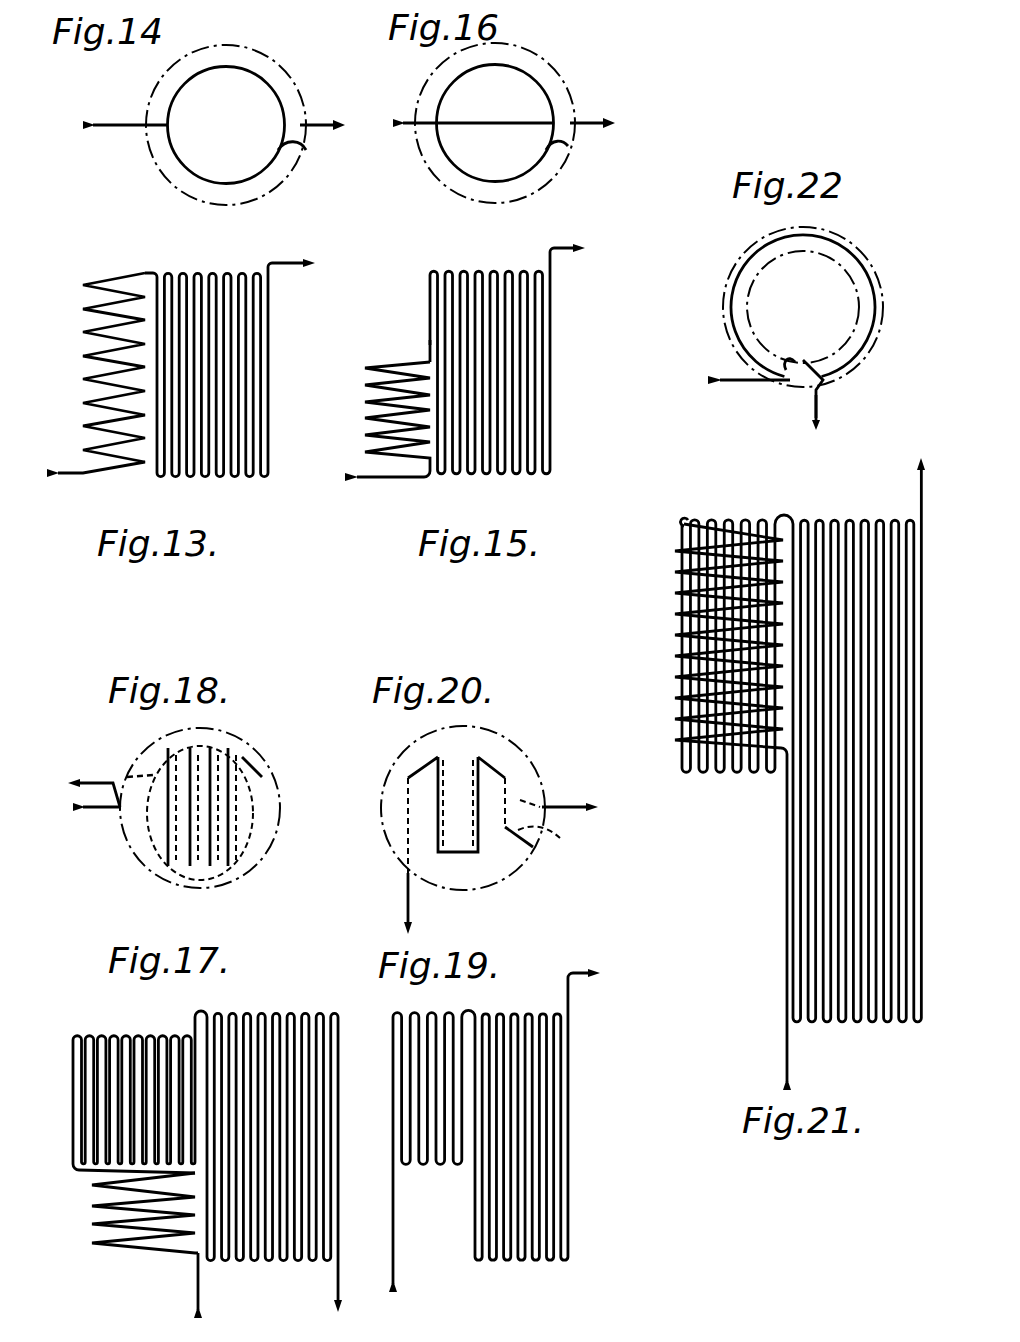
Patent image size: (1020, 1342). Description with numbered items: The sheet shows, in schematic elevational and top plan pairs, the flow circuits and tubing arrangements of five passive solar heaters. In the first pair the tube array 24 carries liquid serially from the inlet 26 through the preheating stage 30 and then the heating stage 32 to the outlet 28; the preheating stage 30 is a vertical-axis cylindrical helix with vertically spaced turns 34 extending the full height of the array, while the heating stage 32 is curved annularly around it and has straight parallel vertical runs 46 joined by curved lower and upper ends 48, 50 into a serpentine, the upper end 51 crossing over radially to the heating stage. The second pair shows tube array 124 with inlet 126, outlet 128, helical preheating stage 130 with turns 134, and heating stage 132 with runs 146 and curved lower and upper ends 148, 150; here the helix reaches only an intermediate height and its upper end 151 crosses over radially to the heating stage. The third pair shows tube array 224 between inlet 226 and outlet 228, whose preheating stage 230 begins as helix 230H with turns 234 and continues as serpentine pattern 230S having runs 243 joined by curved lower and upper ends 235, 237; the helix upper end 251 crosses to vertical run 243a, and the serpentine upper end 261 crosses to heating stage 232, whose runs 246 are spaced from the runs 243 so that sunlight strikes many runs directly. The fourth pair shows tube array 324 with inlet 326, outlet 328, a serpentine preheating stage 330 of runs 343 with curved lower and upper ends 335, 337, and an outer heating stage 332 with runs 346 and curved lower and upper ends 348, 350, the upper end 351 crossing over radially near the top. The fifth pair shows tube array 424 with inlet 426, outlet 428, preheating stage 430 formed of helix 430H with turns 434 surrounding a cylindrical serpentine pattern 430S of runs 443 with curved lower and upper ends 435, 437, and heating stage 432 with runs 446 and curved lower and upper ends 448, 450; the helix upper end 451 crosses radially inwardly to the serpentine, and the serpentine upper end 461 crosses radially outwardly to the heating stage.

In FIG. 14, the tube array 24 is at (176, 205).
In FIG. 13, the tube array 24 is at (192, 264).
In FIG. 14, the inlet 26 is at (125, 128).
In FIG. 13, the inlet 26 is at (66, 474).
In FIG. 14, the outlet 28 is at (322, 118).
In FIG. 13, the outlet 28 is at (286, 262).
In FIG. 14, the preheating stage 30 is at (266, 72).
In FIG. 13, the preheating stage 30 is at (74, 374).
In FIG. 14, the heating stage 32 is at (245, 42).
In FIG. 13, the heating stage 32 is at (232, 484).
In FIG. 13, the turns 34 is at (92, 330).
In FIG. 13, the runs 46 is at (235, 338).
In FIG. 13, the lower ends 48 is at (165, 474).
In FIG. 13, the upper ends 50 is at (216, 276).
In FIG. 14, the upper end of preheating stage 51 is at (300, 150).
In FIG. 13, the upper end of preheating stage 51 is at (150, 272).
In FIG. 16, the tube array 124 is at (466, 210).
In FIG. 15, the tube array 124 is at (466, 262).
In FIG. 16, the inlet 126 is at (407, 128).
In FIG. 15, the inlet 126 is at (372, 478).
In FIG. 16, the outlet 128 is at (585, 117).
In FIG. 15, the outlet 128 is at (578, 246).
In FIG. 16, the preheating stage 130 is at (530, 60).
In FIG. 15, the preheating stage 130 is at (352, 422).
In FIG. 16, the heating stage 132 is at (562, 60).
In FIG. 15, the heating stage 132 is at (560, 404).
In FIG. 15, the turns 134 is at (380, 372).
In FIG. 15, the runs 146 is at (512, 326).
In FIG. 15, the lower ends 148 is at (490, 472).
In FIG. 15, the upper ends 150 is at (512, 274).
In FIG. 16, the upper end of preheating stage 151 is at (572, 148).
In FIG. 15, the upper end of preheating stage 151 is at (426, 348).
In FIG. 18, the tube array 224 is at (262, 878).
In FIG. 17, the tube array 224 is at (264, 1008).
In FIG. 18, the inlet 226 is at (95, 812).
In FIG. 17, the inlet 226 is at (195, 1290).
In FIG. 18, the outlet 228 is at (96, 778).
In FIG. 17, the outlet 228 is at (335, 1282).
In FIG. 17, the preheating stage 230 is at (120, 1262).
In FIG. 18, the helix 230H is at (232, 758).
In FIG. 17, the helix 230H is at (102, 1198).
In FIG. 18, the serpentine pattern 230S is at (242, 828).
In FIG. 17, the serpentine pattern 230S is at (100, 1028).
In FIG. 18, the heating stage 232 is at (175, 893).
In FIG. 17, the heating stage 232 is at (320, 1008).
In FIG. 17, the turns 234 is at (110, 1222).
In FIG. 17, the lower ends 235 is at (205, 1260).
In FIG. 17, the upper ends 237 is at (168, 1040).
In FIG. 17, the runs 243 is at (105, 1115).
In FIG. 17, the vertical run 243a is at (72, 1072).
In FIG. 17, the runs 246 is at (300, 1160).
In FIG. 18, the upper end of helical preheating stage 251 is at (262, 792).
In FIG. 17, the upper end of helical preheating stage 251 is at (90, 1172).
In FIG. 17, the upper end of serpentine preheating stage 261 is at (200, 1014).
In FIG. 20, the tube array 324 is at (540, 876).
In FIG. 19, the tube array 324 is at (548, 982).
In FIG. 20, the inlet 326 is at (410, 910).
In FIG. 19, the inlet 326 is at (400, 1265).
In FIG. 20, the outlet 328 is at (556, 803).
In FIG. 19, the outlet 328 is at (582, 985).
In FIG. 20, the preheating stage 330 is at (400, 792).
In FIG. 19, the preheating stage 330 is at (425, 1175).
In FIG. 20, the heating stage 332 is at (512, 735).
In FIG. 19, the heating stage 332 is at (520, 1270).
In FIG. 19, the lower ends 335 is at (450, 1162).
In FIG. 19, the upper ends 337 is at (412, 1012).
In FIG. 19, the runs 343 is at (428, 1070).
In FIG. 19, the runs 346 is at (535, 1155).
In FIG. 19, the lower ends 348 is at (555, 1260).
In FIG. 19, the upper ends 350 is at (518, 1016).
In FIG. 20, the upper end of preheating stage 351 is at (556, 839).
In FIG. 19, the upper end of preheating stage 351 is at (480, 1005).
In FIG. 22, the tube array 424 is at (864, 395).
In FIG. 21, the tube array 424 is at (866, 494).
In FIG. 22, the inlet 426 is at (725, 379).
In FIG. 21, the inlet 426 is at (785, 1033).
In FIG. 22, the outlet 428 is at (808, 412).
In FIG. 21, the outlet 428 is at (919, 512).
In FIG. 21, the preheating stage 430 is at (738, 788).
In FIG. 22, the helix 430H is at (860, 358).
In FIG. 21, the helix 430H is at (668, 651).
In FIG. 22, the serpentine pattern 430S is at (815, 250).
In FIG. 21, the serpentine pattern 430S is at (668, 705).
In FIG. 22, the heating stage 432 is at (714, 311).
In FIG. 21, the heating stage 432 is at (866, 1033).
In FIG. 21, the turns 434 is at (695, 600).
In FIG. 21, the lower ends 435 is at (700, 772).
In FIG. 21, the upper ends 437 is at (728, 522).
In FIG. 21, the runs 443 is at (700, 758).
In FIG. 21, the runs 446 is at (880, 920).
In FIG. 21, the lower ends 448 is at (905, 1022).
In FIG. 21, the upper ends 450 is at (838, 522).
In FIG. 22, the upper end of helical preheating stage 451 is at (788, 360).
In FIG. 21, the upper end of helical preheating stage 451 is at (680, 522).
In FIG. 22, the upper end of serpentine preheating stage 461 is at (825, 395).
In FIG. 21, the upper end of serpentine preheating stage 461 is at (785, 516).